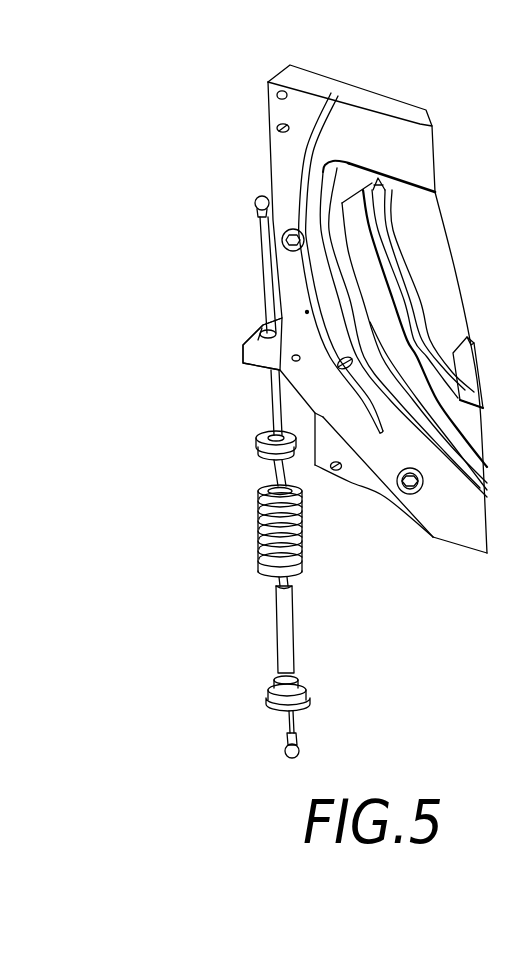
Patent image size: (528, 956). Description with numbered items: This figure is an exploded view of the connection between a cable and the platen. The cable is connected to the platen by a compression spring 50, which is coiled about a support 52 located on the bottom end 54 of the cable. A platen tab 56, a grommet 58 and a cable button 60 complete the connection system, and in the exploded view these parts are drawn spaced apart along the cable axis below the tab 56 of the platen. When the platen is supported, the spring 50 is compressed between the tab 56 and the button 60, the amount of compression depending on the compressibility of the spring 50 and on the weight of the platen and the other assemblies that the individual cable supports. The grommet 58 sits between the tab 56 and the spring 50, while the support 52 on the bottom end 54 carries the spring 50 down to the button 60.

The compression spring 50 is at (258, 533).
The support 52 is at (276, 628).
The bottom end 54 is at (250, 704).
The platen tab 56 is at (244, 347).
The grommet 58 is at (256, 440).
The cable button 60 is at (284, 752).